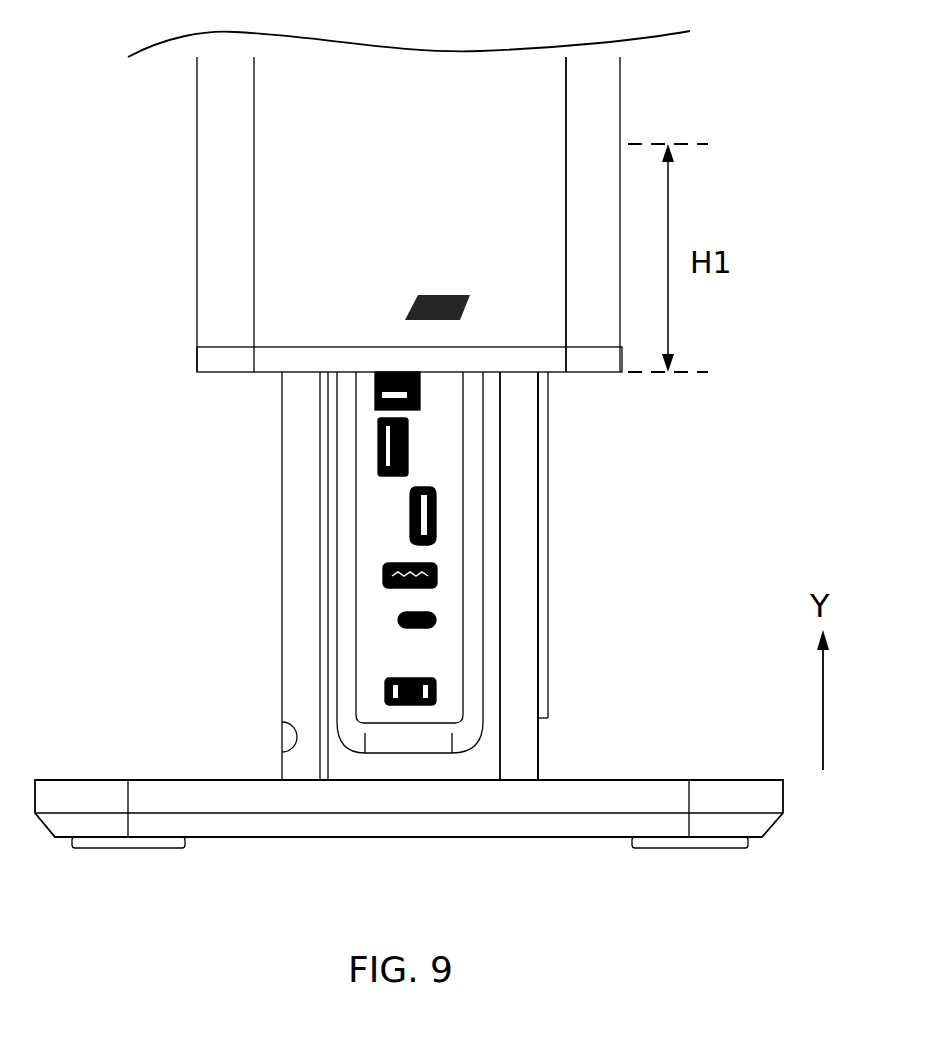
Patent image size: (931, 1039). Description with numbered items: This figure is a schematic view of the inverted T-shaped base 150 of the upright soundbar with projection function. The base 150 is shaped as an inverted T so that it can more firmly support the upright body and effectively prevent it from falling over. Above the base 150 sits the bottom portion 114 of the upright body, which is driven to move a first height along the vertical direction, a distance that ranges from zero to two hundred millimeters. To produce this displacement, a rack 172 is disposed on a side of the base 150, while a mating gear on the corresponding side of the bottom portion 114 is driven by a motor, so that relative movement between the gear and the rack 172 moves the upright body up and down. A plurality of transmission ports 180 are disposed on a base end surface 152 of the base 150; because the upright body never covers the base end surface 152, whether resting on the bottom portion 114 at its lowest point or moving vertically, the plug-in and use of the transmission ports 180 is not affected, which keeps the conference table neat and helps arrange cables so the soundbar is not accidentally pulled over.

The bottom portion 114 is at (212, 357).
The base 150 is at (517, 745).
The base end surface 152 is at (375, 710).
The rack 172 is at (543, 543).
The transmission ports 180 is at (398, 620).